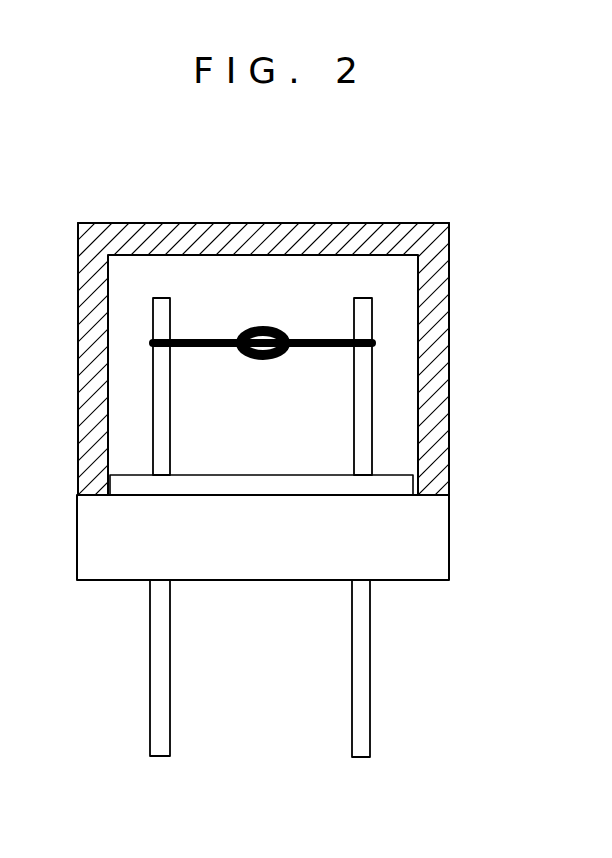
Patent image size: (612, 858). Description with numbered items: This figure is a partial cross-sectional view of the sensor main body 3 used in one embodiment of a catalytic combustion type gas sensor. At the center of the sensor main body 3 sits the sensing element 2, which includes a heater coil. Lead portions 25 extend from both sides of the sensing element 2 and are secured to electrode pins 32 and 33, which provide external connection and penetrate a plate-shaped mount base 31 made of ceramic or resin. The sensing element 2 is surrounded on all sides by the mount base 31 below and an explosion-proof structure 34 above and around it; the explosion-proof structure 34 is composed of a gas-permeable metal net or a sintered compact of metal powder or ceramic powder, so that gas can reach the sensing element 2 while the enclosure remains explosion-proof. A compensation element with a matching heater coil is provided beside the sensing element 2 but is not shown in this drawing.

The sensing element 2 is at (264, 330).
The sensor main body 3 is at (394, 182).
The lead portions 25 is at (200, 337).
The mount base 31 is at (444, 535).
The electrode pin 32 is at (156, 683).
The electrode pin 33 is at (366, 683).
The explosion-proof structure 34 is at (447, 280).